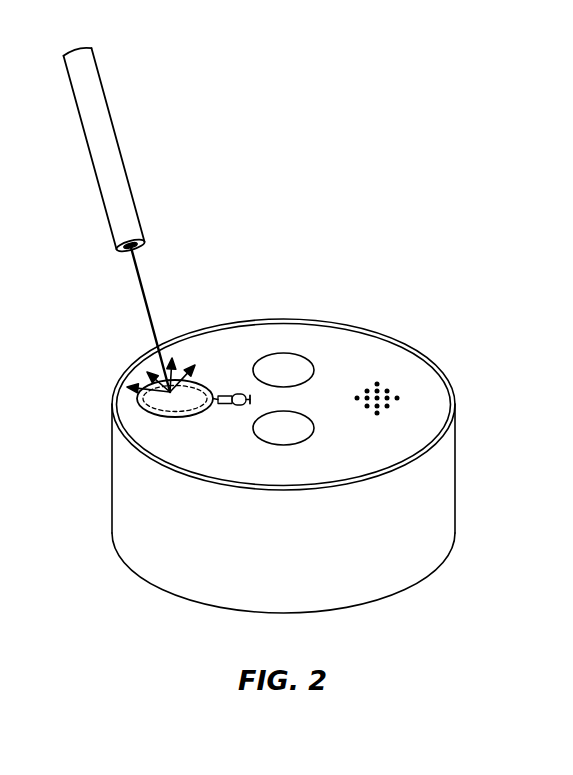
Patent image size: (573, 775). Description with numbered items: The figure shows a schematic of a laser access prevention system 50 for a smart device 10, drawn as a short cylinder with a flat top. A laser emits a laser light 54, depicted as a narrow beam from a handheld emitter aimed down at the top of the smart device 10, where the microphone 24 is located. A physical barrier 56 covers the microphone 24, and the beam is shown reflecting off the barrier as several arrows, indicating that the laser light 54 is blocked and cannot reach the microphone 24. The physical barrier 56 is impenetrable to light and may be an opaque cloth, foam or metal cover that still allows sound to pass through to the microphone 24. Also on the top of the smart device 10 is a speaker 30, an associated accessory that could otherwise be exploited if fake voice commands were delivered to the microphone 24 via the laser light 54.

The laser access prevention system 50 is at (419, 28).
The smart device 10 is at (455, 467).
The speaker 30 is at (378, 386).
The microphone 24 is at (206, 385).
The laser light 54 is at (143, 297).
The physical barrier 56 is at (173, 421).